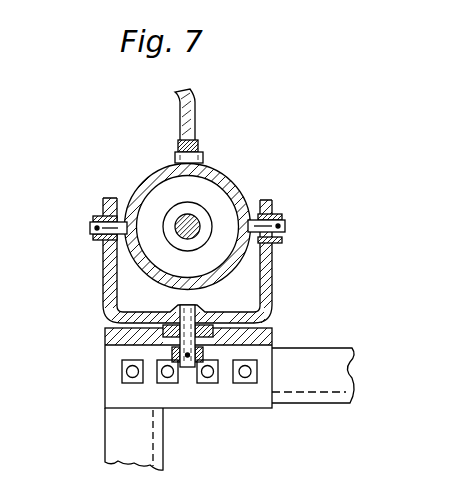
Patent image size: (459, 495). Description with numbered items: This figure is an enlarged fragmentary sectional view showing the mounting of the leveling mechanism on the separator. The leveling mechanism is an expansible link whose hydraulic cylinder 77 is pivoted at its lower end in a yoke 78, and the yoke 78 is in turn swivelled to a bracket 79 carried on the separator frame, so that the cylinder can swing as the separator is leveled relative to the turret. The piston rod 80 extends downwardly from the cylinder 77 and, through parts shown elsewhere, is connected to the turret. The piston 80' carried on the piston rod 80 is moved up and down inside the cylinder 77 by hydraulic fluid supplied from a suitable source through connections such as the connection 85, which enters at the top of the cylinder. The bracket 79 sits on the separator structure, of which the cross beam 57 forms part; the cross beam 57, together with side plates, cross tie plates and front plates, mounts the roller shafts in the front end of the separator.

The cross beam 57 is at (117, 443).
The hydraulic cylinder 77 is at (239, 182).
The yoke 78 is at (272, 287).
The bracket 79 is at (105, 333).
The piston rod 80 is at (127, 200).
The piston 80' is at (125, 173).
The connection 85 is at (177, 104).